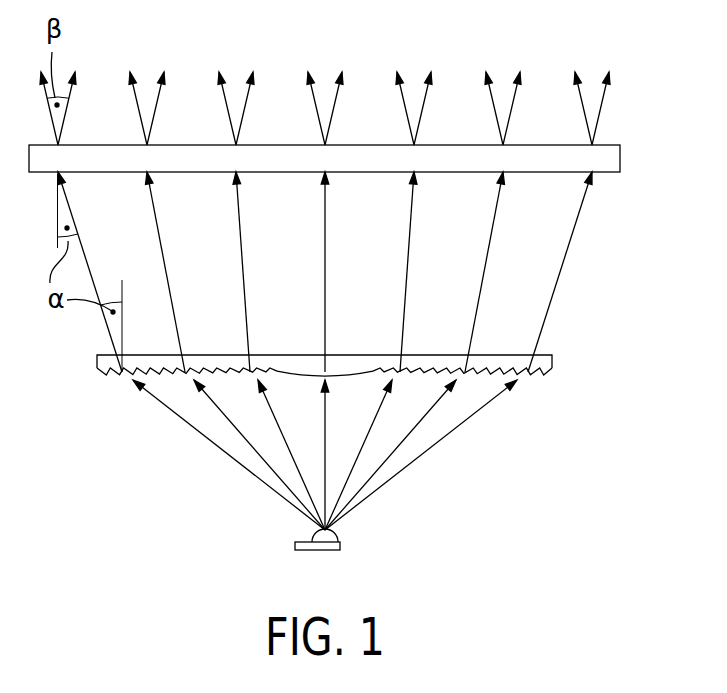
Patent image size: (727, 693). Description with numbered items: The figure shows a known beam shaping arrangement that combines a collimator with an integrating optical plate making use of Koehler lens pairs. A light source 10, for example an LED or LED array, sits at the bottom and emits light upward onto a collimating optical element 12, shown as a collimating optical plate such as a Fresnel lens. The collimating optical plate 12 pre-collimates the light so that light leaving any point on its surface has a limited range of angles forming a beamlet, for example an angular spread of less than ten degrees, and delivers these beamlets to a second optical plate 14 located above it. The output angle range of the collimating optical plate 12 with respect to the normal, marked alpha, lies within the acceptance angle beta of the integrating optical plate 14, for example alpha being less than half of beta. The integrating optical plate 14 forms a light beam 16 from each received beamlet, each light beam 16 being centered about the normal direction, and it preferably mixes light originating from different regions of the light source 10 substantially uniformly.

The light source 10 is at (340, 546).
The collimating optical element 12 is at (552, 367).
The second optical plate 14 is at (608, 157).
The light beam 16 is at (147, 80).